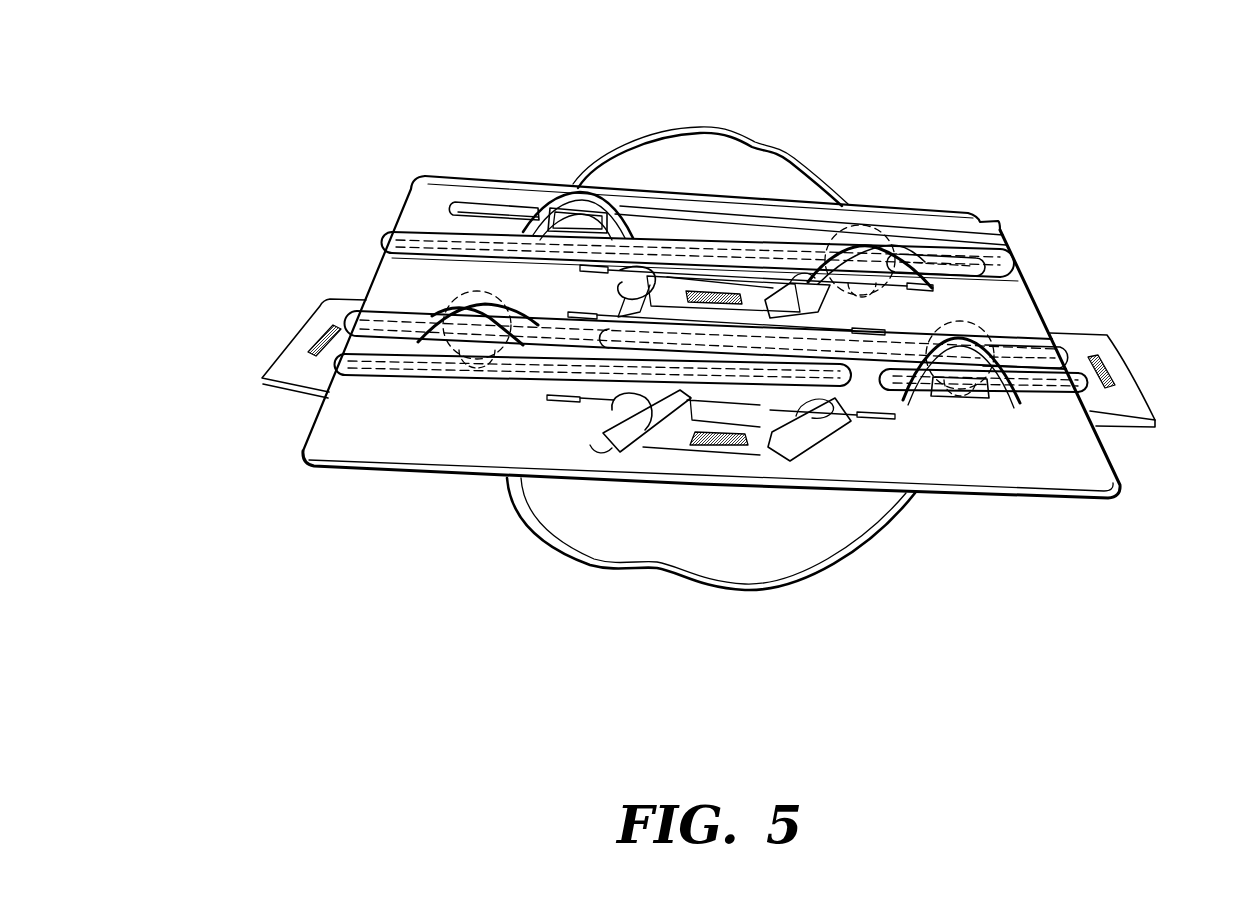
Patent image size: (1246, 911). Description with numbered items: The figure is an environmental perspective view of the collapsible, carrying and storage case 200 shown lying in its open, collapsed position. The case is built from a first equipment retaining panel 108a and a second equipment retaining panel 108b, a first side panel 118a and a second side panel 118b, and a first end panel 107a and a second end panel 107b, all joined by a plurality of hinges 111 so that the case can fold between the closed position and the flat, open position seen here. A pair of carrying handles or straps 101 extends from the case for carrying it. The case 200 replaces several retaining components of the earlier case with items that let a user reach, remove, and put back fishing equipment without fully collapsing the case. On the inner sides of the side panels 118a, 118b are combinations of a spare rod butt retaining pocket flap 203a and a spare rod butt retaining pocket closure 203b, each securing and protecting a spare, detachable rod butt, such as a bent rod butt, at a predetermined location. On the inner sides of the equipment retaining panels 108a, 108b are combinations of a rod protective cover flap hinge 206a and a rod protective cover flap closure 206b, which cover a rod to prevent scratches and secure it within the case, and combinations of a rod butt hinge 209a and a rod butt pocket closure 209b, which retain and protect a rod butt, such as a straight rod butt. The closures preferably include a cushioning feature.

The collapsible, carrying and storage case 200 is at (1012, 80).
The carrying handles or straps 101 is at (780, 148).
The first end panel 107a is at (1092, 334).
The second end panel 107b is at (288, 367).
The first equipment retaining panel 108a is at (413, 217).
The second equipment retaining panel 108b is at (348, 379).
The first side panel 118a is at (392, 290).
The second side panel 118b is at (997, 473).
The rod protective cover flap hinge 206a is at (978, 232).
The rod protective cover flap closure 206b is at (513, 253).
The spare rod butt retaining pocket flap 203a is at (620, 302).
The spare rod butt retaining pocket closure 203b is at (790, 296).
The rod butt hinge 209a is at (473, 212).
The rod butt pocket closure 209b is at (975, 286).
The hinges 111 is at (547, 398).